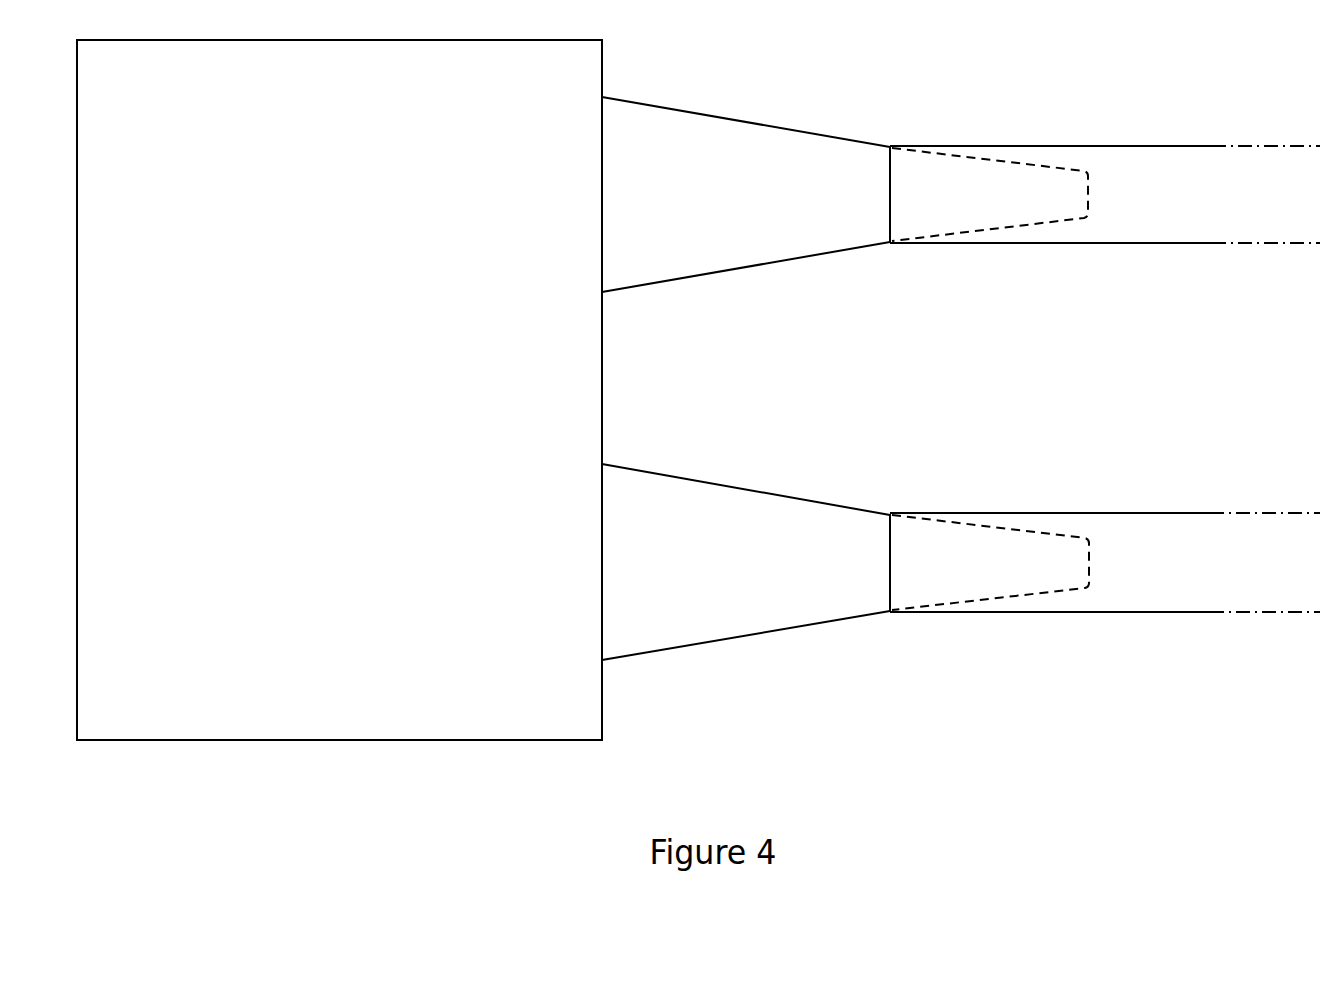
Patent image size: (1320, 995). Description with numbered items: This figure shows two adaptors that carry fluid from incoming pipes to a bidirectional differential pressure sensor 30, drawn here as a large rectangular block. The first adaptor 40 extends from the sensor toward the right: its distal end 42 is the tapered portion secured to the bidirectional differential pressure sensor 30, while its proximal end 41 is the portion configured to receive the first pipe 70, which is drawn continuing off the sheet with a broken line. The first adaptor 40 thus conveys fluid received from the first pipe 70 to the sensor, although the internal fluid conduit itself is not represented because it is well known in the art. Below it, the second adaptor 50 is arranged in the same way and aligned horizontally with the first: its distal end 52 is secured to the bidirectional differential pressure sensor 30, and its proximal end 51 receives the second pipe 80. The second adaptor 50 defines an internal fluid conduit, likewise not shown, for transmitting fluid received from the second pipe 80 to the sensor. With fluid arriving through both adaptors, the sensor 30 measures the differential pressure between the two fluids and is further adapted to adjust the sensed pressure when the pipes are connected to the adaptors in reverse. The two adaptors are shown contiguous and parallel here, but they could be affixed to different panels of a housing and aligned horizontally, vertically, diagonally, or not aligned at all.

The bidirectional differential pressure sensor 30 is at (336, 649).
The first adaptor 40 is at (961, 185).
The proximal end 41 is at (1015, 206).
The distal end 42 is at (654, 206).
The second adaptor 50 is at (961, 552).
The proximal end 51 is at (1015, 574).
The distal end 52 is at (654, 574).
The first pipe 70 is at (1244, 204).
The second pipe 80 is at (1244, 574).